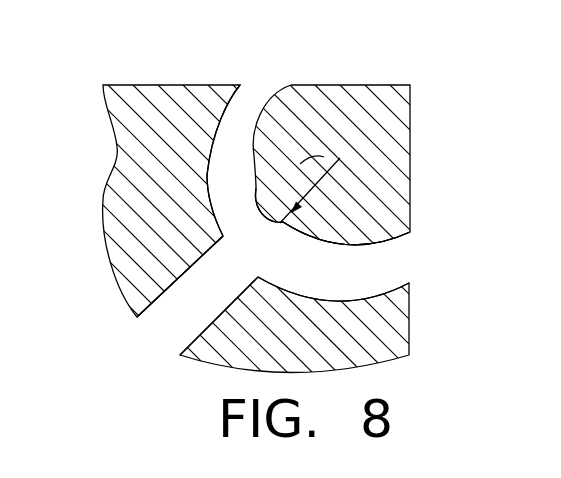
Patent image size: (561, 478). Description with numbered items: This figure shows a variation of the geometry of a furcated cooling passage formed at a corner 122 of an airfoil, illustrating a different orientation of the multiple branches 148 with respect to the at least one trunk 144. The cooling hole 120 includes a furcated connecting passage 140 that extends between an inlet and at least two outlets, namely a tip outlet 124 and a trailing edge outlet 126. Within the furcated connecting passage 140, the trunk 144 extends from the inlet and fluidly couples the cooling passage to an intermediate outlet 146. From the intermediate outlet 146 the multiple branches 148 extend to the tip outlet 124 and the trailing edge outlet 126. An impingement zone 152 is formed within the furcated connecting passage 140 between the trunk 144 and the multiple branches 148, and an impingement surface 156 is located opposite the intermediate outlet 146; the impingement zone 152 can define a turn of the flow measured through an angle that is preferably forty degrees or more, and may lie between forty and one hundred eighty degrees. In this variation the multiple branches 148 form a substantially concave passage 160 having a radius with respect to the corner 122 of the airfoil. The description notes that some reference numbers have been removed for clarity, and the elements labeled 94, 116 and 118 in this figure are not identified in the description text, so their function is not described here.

The first jaw body 94 is at (175, 84).
The second jaw body 116 is at (408, 323).
The lower surface 118 is at (327, 347).
The cooling hole 120 is at (183, 292).
The corner 122 is at (410, 76).
The tip outlet 124 is at (267, 83).
The trailing edge outlet 126 is at (393, 259).
The furcated connecting passage 140 is at (212, 160).
The trunk 144 is at (193, 333).
The intermediate outlet 146 is at (245, 252).
The branches 148 is at (231, 117).
The impingement zone 152 is at (280, 243).
The impingement surface 156 is at (246, 199).
The concave passage 160 is at (352, 280).